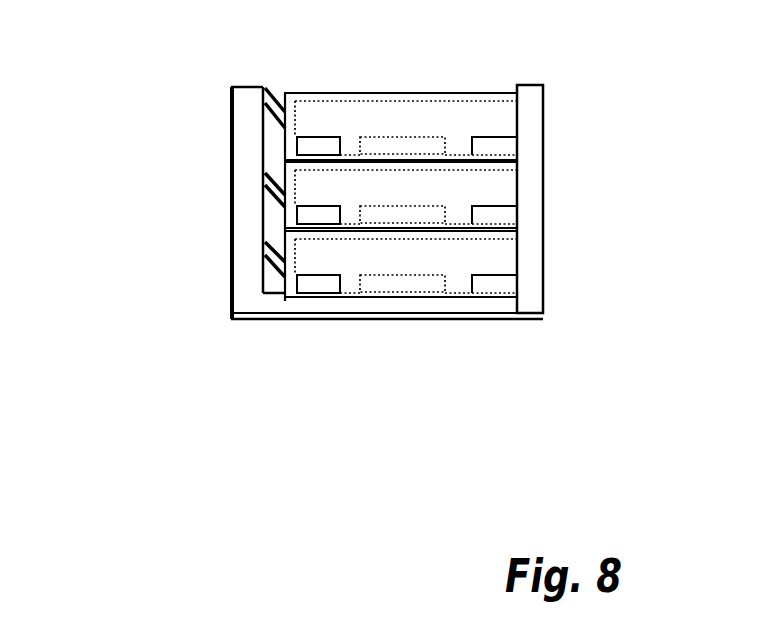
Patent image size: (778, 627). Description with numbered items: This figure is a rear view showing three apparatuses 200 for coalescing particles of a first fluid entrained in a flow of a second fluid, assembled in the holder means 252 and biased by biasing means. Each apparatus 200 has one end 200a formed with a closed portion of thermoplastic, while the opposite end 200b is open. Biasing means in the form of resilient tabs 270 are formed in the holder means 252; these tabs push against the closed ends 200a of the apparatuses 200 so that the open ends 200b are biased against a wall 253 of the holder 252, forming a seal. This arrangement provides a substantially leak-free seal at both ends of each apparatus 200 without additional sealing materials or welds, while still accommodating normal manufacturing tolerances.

The apparatus 200 is at (423, 108).
The closed end 200a is at (291, 110).
The open end 200b is at (520, 123).
The holder means 252 is at (530, 383).
The wall 253 is at (537, 160).
The resilient tabs 270 is at (265, 105).